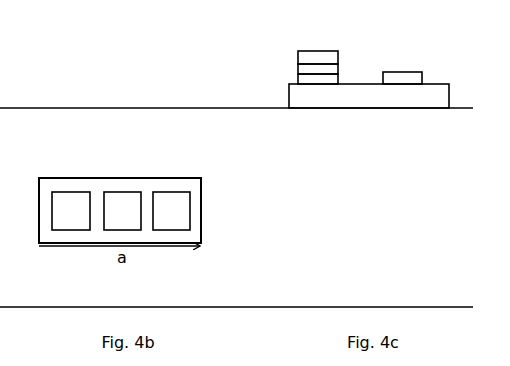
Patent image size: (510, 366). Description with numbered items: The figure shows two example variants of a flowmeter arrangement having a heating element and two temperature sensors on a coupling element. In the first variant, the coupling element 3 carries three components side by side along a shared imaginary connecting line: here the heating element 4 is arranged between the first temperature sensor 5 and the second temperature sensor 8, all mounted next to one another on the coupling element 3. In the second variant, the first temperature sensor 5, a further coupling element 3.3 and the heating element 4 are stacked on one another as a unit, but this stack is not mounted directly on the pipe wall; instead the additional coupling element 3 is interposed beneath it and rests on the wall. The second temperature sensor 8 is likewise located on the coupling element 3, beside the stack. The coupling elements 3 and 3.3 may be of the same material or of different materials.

In FIG. 4C, the coupling element 3 is at (368, 99).
In FIG. 4B, the coupling element 3 is at (52, 176).
In FIG. 4C, the coupling element 3.3 is at (333, 69).
In FIG. 4C, the heating element 4 is at (313, 54).
In FIG. 4B, the heating element 4 is at (71, 211).
In FIG. 4C, the first temperature sensor 5 is at (305, 75).
In FIG. 4B, the first temperature sensor 5 is at (171, 211).
In FIG. 4C, the second temperature sensor 8 is at (405, 71).
In FIG. 4B, the second temperature sensor 8 is at (122, 211).